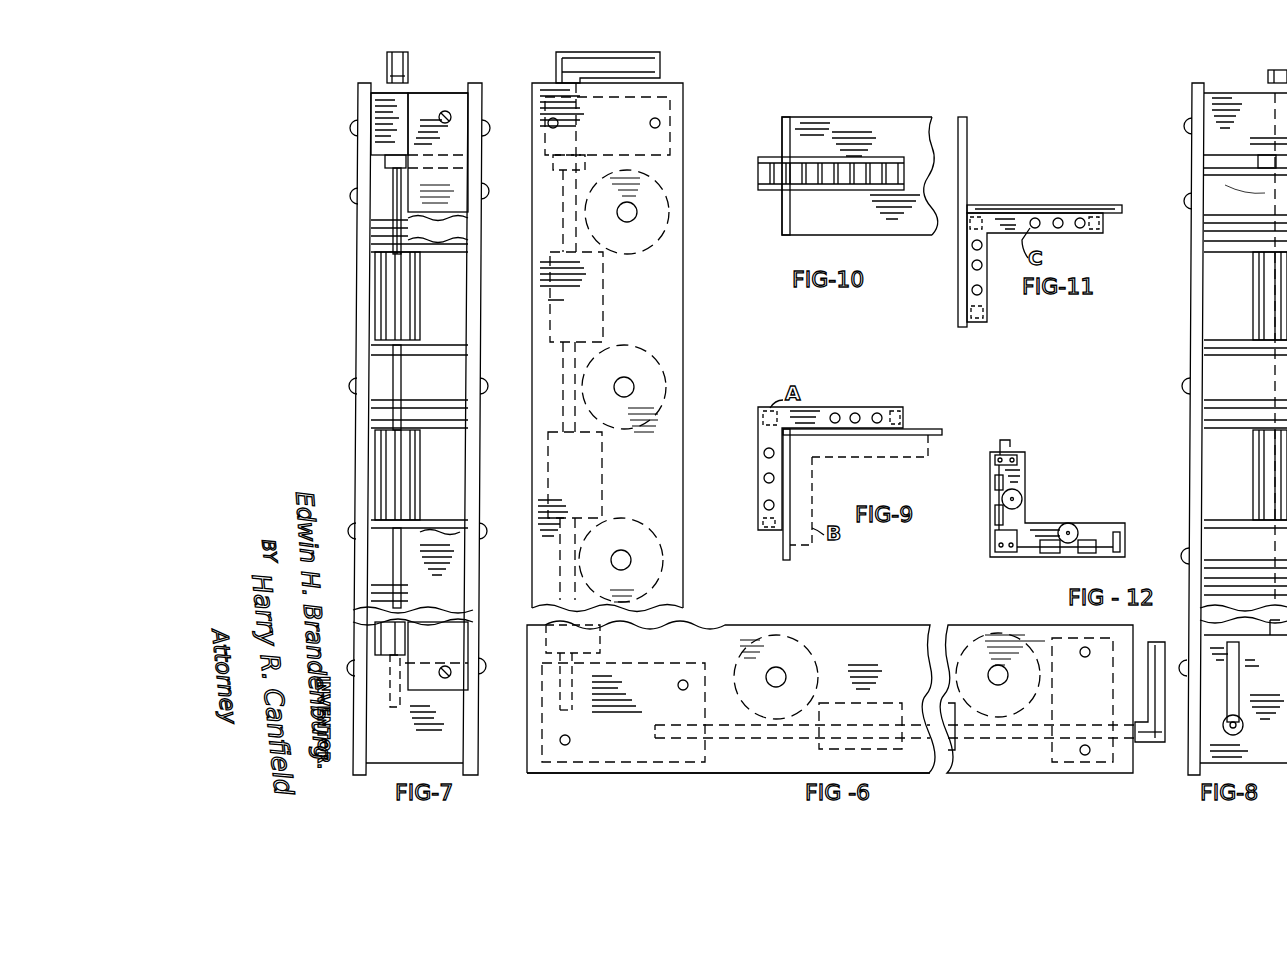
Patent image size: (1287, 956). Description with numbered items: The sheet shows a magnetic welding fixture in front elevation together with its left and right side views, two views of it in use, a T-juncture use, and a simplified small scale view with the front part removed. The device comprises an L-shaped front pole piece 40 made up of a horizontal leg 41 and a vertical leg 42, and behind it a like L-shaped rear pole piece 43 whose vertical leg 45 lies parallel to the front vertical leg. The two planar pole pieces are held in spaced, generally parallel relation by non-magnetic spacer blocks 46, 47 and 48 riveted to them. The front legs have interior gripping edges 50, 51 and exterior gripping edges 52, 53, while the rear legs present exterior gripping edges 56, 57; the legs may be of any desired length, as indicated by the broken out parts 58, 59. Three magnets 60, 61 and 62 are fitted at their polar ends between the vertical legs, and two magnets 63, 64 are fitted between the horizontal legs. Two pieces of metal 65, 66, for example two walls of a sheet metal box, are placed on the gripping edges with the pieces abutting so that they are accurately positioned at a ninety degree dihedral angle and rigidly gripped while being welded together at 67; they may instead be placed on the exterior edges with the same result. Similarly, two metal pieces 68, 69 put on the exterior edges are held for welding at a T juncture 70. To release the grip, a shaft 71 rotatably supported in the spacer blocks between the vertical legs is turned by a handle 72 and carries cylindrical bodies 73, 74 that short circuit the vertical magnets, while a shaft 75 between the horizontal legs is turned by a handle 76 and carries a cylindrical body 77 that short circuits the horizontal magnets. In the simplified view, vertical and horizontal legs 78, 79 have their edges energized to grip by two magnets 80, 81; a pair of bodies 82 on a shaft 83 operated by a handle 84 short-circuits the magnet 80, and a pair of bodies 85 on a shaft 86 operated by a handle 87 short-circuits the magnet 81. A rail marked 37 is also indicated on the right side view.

In FIG. 8, the rail 37 is at (1188, 538).
In FIG. 6, the front pole piece 40 is at (730, 625).
In FIG. 6, the horizontal leg 41 is at (775, 625).
In FIG. 8, the horizontal leg 41 is at (1195, 705).
In FIG. 7, the vertical leg 42 is at (478, 548).
In FIG. 6, the vertical leg 42 is at (672, 562).
In FIG. 8, the vertical leg 42 is at (1188, 563).
In FIG. 7, the rear pole piece 43 is at (365, 500).
In FIG. 7, the vertical leg 45 is at (365, 460).
In FIG. 7, the spacer block 46 is at (375, 136).
In FIG. 6, the spacer block 46 is at (670, 125).
In FIG. 7, the spacer block 47 is at (378, 712).
In FIG. 6, the spacer block 47 is at (660, 663).
In FIG. 6, the spacer block 48 is at (1062, 638).
In FIG. 6, the interior gripping edge 50 is at (830, 625).
In FIG. 6, the interior gripping edge 51 is at (683, 518).
In FIG. 6, the exterior gripping edge 52 is at (755, 774).
In FIG. 6, the exterior gripping edge 53 is at (532, 404).
In FIG. 7, the exterior gripping edge 56 is at (365, 405).
In FIG. 7, the exterior gripping edge 57 is at (358, 773).
In FIG. 6, the broken out part 58 is at (945, 630).
In FIG. 7, the broken out part 59 is at (365, 618).
In FIG. 6, the broken out part 59 is at (1188, 606).
In FIG. 8, the broken out part 59 is at (1192, 612).
In FIG. 7, the magnet 60 is at (392, 183).
In FIG. 6, the magnet 60 is at (628, 253).
In FIG. 8, the magnet 60 is at (1222, 252).
In FIG. 7, the magnet 61 is at (419, 377).
In FIG. 6, the magnet 61 is at (626, 430).
In FIG. 8, the magnet 61 is at (1222, 428).
In FIG. 7, the magnet 62 is at (375, 545).
In FIG. 6, the magnet 62 is at (630, 518).
In FIG. 8, the magnet 62 is at (1215, 528).
In FIG. 6, the magnet 63 is at (815, 655).
In FIG. 6, the magnet 64 is at (978, 630).
In FIG. 10, the piece of metal 65 is at (786, 146).
In FIG. 9, the piece of metal 65 is at (790, 505).
In FIG. 10, the piece of metal 66 is at (855, 122).
In FIG. 9, the piece of metal 66 is at (912, 430).
In FIG. 10, the weld juncture 67 is at (786, 234).
In FIG. 9, the weld juncture 67 is at (790, 436).
In FIG. 11, the metal piece 68 is at (962, 142).
In FIG. 11, the metal piece 69 is at (1058, 205).
In FIG. 11, the T juncture 70 is at (970, 205).
In FIG. 7, the shaft 71 is at (410, 392).
In FIG. 8, the shaft 71 is at (1272, 382).
In FIG. 6, the handle 72 is at (655, 66).
In FIG. 7, the cylindrical body 73 is at (399, 296).
In FIG. 6, the cylindrical body 73 is at (603, 320).
In FIG. 8, the cylindrical body 73 is at (1270, 296).
In FIG. 7, the cylindrical body 74 is at (399, 475).
In FIG. 6, the cylindrical body 74 is at (602, 484).
In FIG. 8, the cylindrical body 74 is at (1270, 475).
In FIG. 6, the shaft 75 is at (780, 738).
In FIG. 8, the shaft 75 is at (1243, 726).
In FIG. 8, the handle 76 is at (1238, 682).
In FIG. 6, the cylindrical body 77 is at (838, 749).
In FIG. 12, the vertical leg 78 is at (1025, 478).
In FIG. 12, the horizontal leg 79 is at (1098, 525).
In FIG. 12, the magnet 80 is at (1020, 503).
In FIG. 12, the magnet 81 is at (1065, 528).
In FIG. 12, the body 82 is at (995, 476).
In FIG. 12, the shaft 83 is at (995, 497).
In FIG. 12, the handle 84 is at (1010, 442).
In FIG. 12, the body 85 is at (1050, 553).
In FIG. 12, the shaft 86 is at (1065, 553).
In FIG. 12, the handle 87 is at (1125, 540).